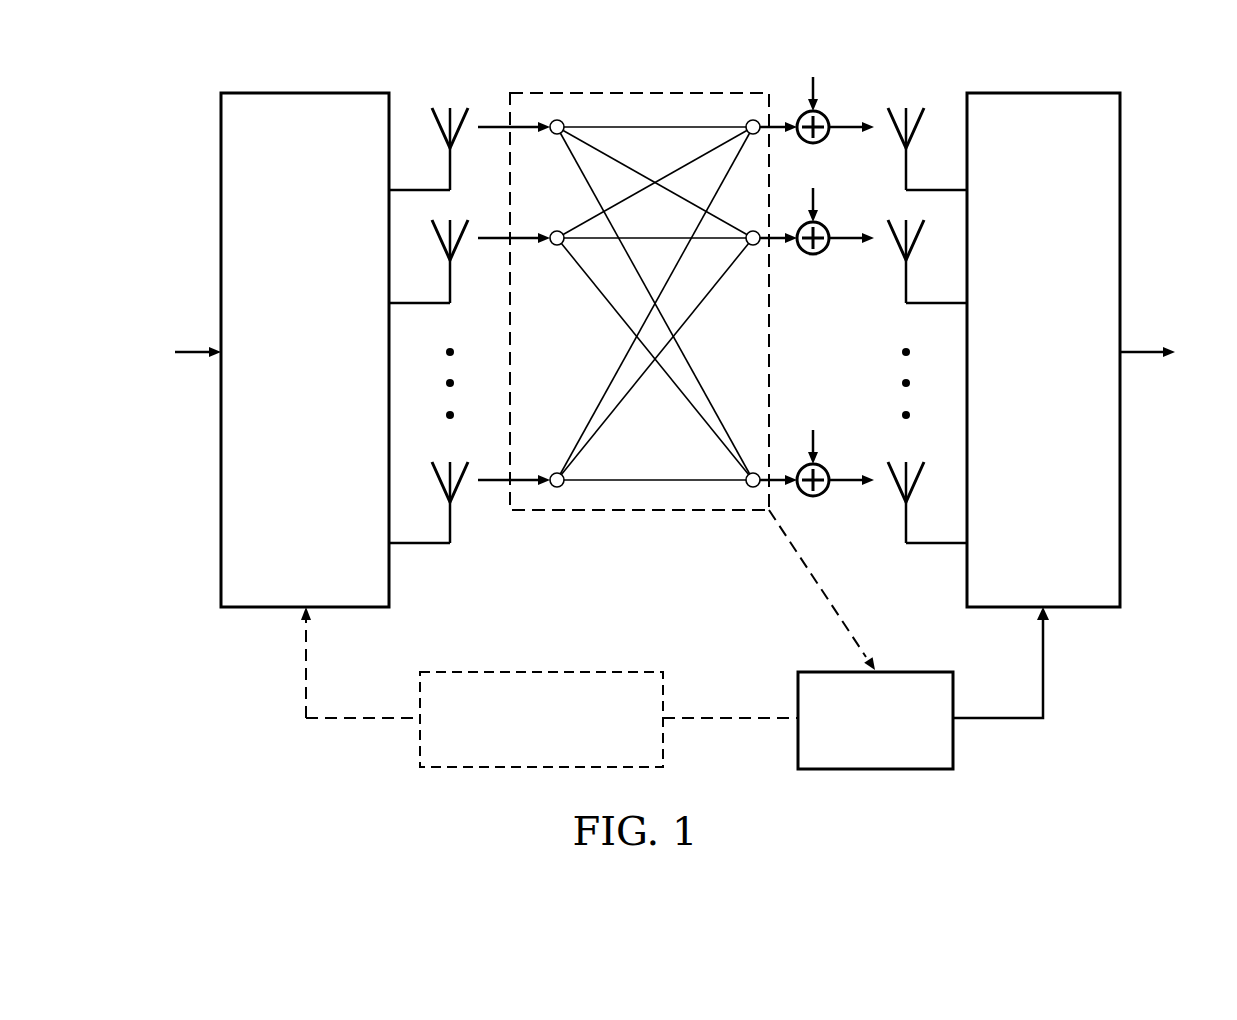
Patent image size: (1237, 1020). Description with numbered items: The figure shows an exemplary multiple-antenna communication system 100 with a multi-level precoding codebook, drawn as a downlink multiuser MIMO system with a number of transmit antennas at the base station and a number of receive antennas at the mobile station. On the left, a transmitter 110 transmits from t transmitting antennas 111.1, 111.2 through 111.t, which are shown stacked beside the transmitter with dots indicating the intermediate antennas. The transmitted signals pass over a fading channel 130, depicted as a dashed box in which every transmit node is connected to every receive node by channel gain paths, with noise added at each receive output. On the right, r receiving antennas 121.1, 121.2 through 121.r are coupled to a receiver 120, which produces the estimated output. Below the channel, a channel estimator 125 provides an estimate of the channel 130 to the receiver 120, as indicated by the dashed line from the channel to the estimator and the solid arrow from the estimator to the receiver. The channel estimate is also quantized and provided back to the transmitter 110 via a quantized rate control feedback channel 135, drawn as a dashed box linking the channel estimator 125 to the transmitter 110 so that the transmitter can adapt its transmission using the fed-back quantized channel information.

The multiple-antenna communication system 100 is at (518, 30).
The transmitter 110 is at (311, 93).
The transmitting antenna 111.1 is at (436, 122).
The transmitting antenna 111.2 is at (436, 234).
The transmitting antenna 111.t is at (436, 476).
The receiver 120 is at (1044, 93).
The receiving antenna 121.1 is at (915, 130).
The receiving antenna 121.2 is at (915, 242).
The receiving antenna 121.r is at (915, 484).
The channel estimator 125 is at (900, 672).
The fading channel 130 is at (642, 93).
The quantized rate control feedback channel 135 is at (543, 672).